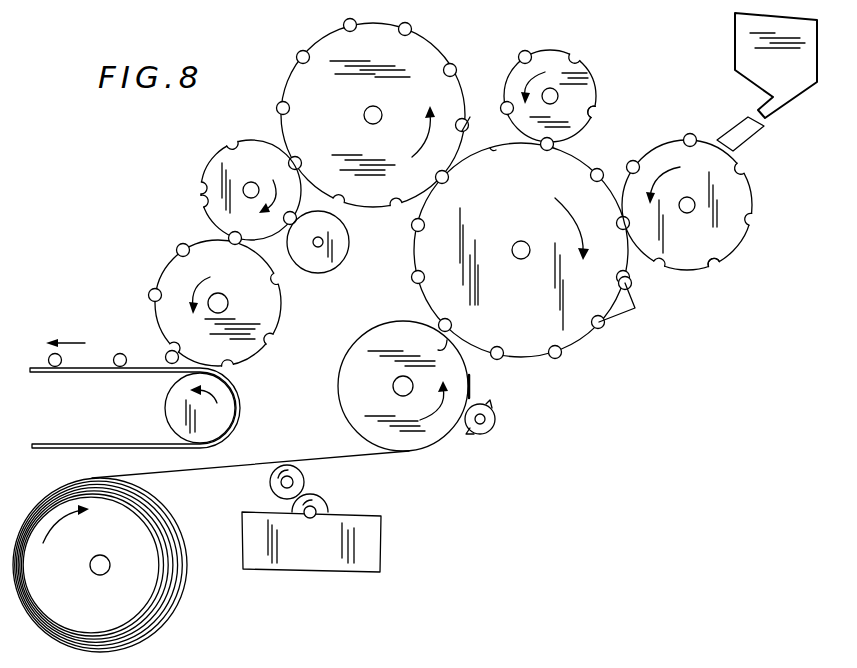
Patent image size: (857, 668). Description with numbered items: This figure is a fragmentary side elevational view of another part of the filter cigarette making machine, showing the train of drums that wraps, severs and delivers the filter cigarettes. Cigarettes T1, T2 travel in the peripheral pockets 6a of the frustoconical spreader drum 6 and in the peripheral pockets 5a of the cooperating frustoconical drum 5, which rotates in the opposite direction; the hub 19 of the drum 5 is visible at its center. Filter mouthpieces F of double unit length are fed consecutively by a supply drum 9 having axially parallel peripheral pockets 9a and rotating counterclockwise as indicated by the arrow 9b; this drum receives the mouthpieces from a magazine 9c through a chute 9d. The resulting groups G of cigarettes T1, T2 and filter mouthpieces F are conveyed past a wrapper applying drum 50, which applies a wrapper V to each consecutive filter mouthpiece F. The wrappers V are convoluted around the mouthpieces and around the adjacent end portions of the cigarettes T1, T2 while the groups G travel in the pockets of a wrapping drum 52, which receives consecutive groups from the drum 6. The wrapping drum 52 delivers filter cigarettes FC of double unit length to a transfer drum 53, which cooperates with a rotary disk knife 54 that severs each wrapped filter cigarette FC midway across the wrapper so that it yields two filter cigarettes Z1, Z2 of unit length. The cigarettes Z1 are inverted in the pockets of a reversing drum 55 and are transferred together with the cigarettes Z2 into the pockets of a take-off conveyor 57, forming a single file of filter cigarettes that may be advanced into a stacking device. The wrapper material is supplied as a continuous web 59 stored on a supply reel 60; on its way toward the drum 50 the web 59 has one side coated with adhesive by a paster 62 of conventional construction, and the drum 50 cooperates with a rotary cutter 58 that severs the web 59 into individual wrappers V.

The frustoconical drum 5 is at (583, 80).
The peripheral pockets 5a is at (590, 109).
The spreader drum 6 is at (574, 335).
The peripheral pockets 6a is at (494, 152).
The supply drum 9 is at (729, 243).
The peripheral pockets 9a is at (710, 269).
The arrow 9b is at (668, 178).
The magazine 9c is at (735, 45).
The chute 9d is at (750, 135).
The cylinder shaft 19 is at (557, 98).
The wrapper applying drum 50 is at (341, 397).
The wrapping drum 52 is at (372, 200).
The transfer drum 53 is at (212, 164).
The rotary disk knife 54 is at (330, 253).
The reversing drum 55 is at (281, 320).
The take-off conveyor 57 is at (247, 410).
The rotary cutter 58 is at (496, 418).
The web 59 is at (196, 470).
The supply reel 60 is at (166, 554).
The paster 62 is at (378, 511).
The filter cigarette of double unit length FC is at (412, 30).
The filter mouthpiece F is at (693, 137).
The group G is at (636, 309).
The wrapper V is at (485, 380).
The cigarette T1 is at (520, 56).
The cigarette T2 is at (556, 146).
The filter cigarette of unit length Z1 is at (230, 238).
The filter cigarette of unit length Z2 is at (49, 360).